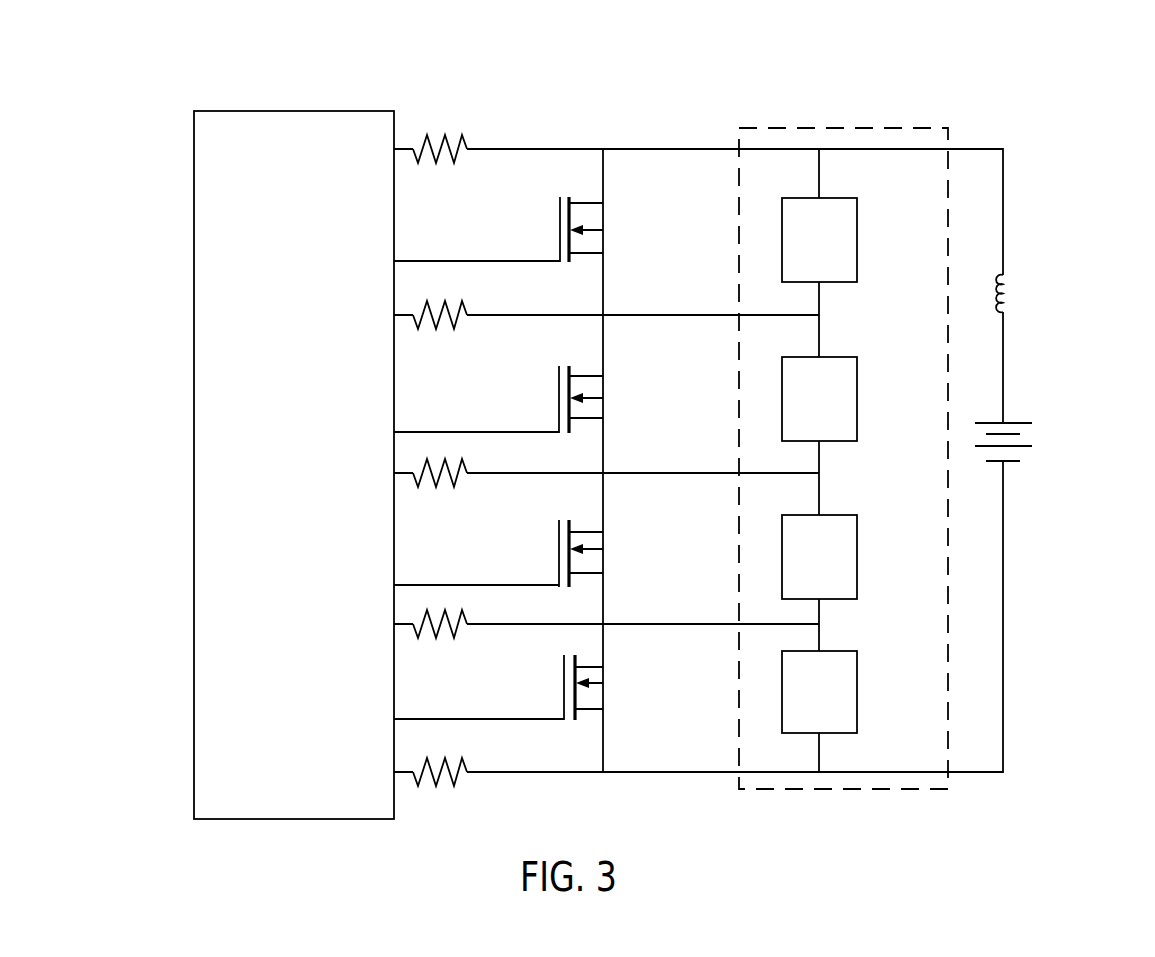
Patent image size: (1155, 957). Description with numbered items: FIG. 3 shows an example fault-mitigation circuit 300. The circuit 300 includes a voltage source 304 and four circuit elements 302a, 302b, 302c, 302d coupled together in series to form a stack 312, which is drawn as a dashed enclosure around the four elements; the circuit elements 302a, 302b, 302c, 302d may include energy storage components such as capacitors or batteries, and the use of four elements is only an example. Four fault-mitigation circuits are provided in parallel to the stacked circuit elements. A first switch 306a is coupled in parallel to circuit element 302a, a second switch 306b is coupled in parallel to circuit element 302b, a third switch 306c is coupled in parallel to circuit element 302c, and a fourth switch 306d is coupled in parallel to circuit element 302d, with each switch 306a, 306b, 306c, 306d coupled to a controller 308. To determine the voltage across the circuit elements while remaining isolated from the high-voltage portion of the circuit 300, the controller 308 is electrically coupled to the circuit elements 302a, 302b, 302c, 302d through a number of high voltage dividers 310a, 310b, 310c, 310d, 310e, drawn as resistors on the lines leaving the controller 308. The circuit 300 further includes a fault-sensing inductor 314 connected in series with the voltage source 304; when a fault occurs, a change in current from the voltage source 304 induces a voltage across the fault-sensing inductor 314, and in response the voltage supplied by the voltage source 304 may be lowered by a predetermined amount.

The circuit 300 is at (1057, 94).
The circuit element 302a is at (857, 249).
The circuit element 302b is at (857, 405).
The circuit element 302c is at (857, 562).
The circuit element 302d is at (857, 695).
The voltage source 304 is at (1018, 421).
The switch 306a is at (630, 230).
The switch 306b is at (631, 398).
The switch 306c is at (631, 545).
The switch 306d is at (633, 683).
The controller 308 is at (194, 344).
The high voltage divider 310a is at (450, 136).
The high voltage divider 310b is at (457, 325).
The high voltage divider 310c is at (457, 483).
The high voltage divider 310d is at (457, 634).
The high voltage divider 310e is at (457, 782).
The stack 312 is at (810, 128).
The fault-sensing inductor 314 is at (1008, 290).